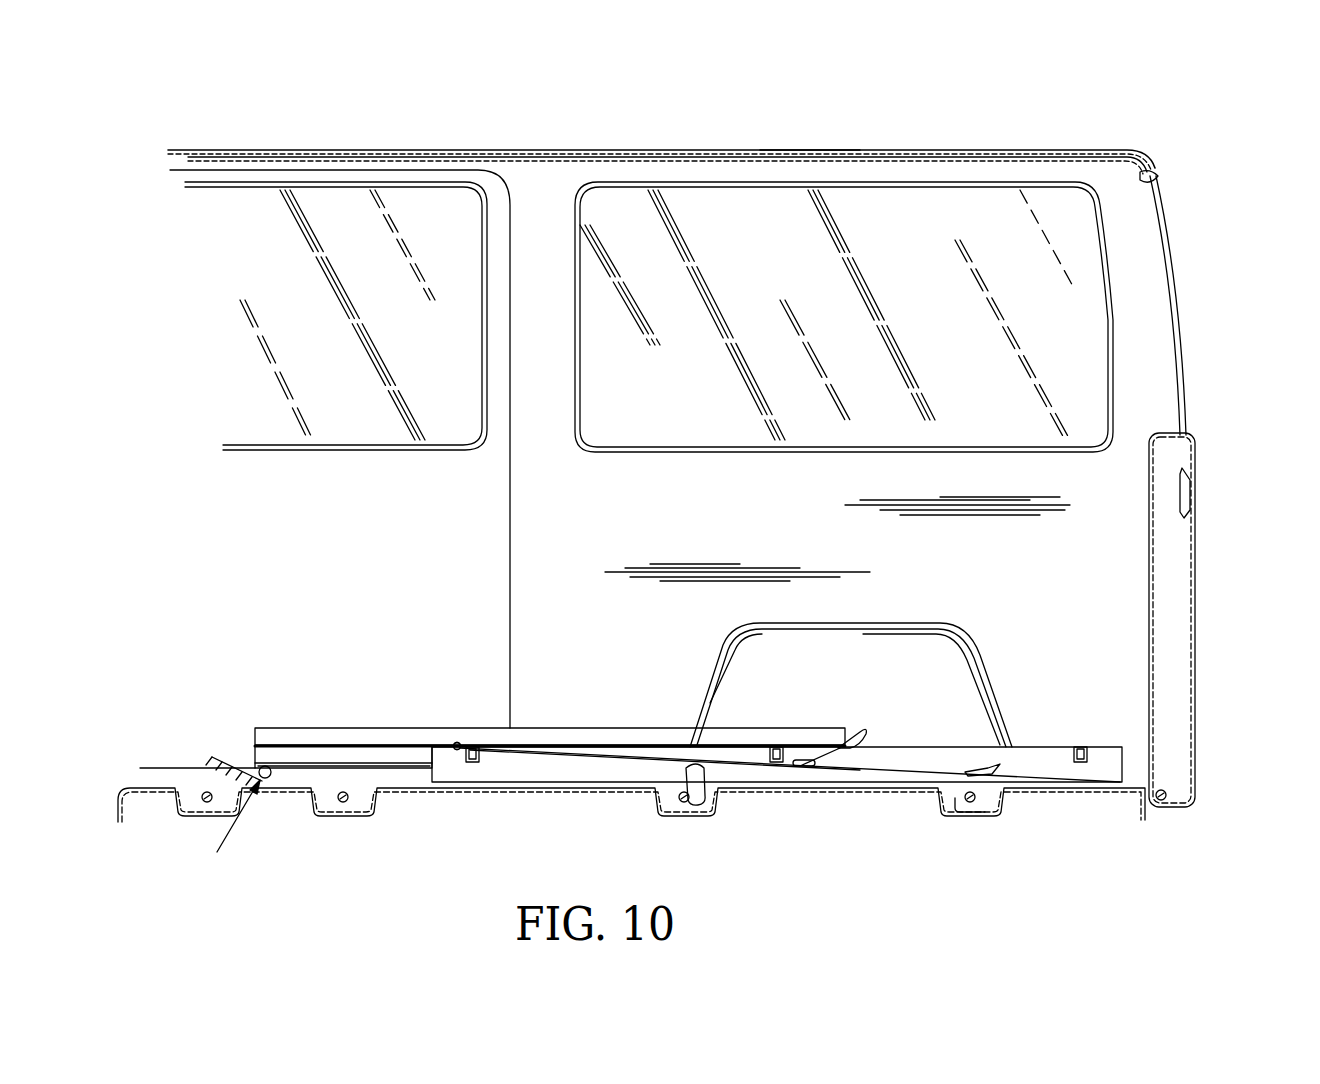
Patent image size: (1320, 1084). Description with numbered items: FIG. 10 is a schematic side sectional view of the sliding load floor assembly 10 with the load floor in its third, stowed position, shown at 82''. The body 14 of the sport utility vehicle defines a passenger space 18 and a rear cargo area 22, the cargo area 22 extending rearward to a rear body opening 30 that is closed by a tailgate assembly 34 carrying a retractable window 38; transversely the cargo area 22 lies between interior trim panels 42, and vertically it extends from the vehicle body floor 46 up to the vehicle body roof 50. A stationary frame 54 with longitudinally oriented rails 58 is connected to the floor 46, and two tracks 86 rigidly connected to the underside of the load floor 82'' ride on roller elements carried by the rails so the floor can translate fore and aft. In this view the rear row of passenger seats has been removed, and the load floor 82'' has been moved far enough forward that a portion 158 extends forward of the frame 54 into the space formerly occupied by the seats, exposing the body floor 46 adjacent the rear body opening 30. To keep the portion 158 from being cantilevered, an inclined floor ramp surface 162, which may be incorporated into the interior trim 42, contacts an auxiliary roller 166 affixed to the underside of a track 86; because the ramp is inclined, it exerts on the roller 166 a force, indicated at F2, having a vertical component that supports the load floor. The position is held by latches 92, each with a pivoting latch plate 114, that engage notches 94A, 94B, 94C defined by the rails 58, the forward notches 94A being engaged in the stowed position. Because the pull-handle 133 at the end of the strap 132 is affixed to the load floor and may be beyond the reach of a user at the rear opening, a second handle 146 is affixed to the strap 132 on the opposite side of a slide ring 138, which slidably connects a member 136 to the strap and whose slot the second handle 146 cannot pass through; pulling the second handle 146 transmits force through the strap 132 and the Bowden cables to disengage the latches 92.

The sliding load floor assembly 10 is at (560, 618).
The body 14 is at (440, 150).
The passenger space 18 is at (208, 540).
The rear cargo area 22 is at (771, 510).
The rear body opening 30 is at (1142, 190).
The tailgate assembly 34 is at (1195, 448).
The retractable window 38 is at (1178, 228).
The interior trim panels 42 is at (978, 550).
The vehicle body floor 46 is at (400, 772).
The vehicle body roof 50 is at (816, 160).
The stationary frame 54 is at (485, 748).
The rails 58 is at (665, 760).
The load floor 82'' is at (343, 709).
The tracks 86 is at (295, 768).
The latches 92 is at (455, 744).
The latch plate 114 is at (457, 746).
The strap 132 is at (893, 772).
The pull-handle 133 is at (862, 735).
The member 136 is at (681, 757).
The slide ring 138 is at (805, 760).
The second handle 146 is at (985, 777).
The portion of the load floor 158 is at (337, 728).
The inclined floor ramp surface 162 is at (237, 752).
The auxiliary roller 166 is at (270, 780).
The notch 94A is at (473, 765).
The notch 94B is at (776, 765).
The notch 94C is at (1082, 765).
The force F2 is at (218, 833).